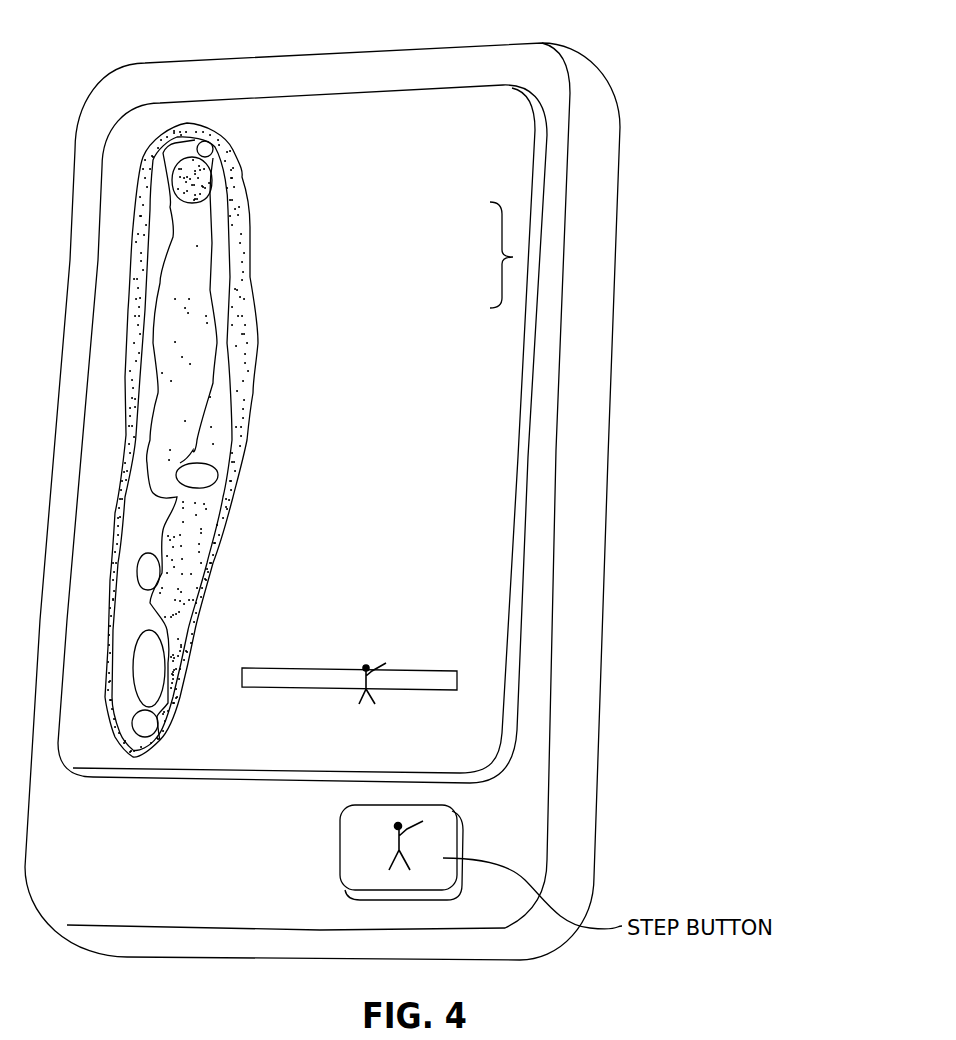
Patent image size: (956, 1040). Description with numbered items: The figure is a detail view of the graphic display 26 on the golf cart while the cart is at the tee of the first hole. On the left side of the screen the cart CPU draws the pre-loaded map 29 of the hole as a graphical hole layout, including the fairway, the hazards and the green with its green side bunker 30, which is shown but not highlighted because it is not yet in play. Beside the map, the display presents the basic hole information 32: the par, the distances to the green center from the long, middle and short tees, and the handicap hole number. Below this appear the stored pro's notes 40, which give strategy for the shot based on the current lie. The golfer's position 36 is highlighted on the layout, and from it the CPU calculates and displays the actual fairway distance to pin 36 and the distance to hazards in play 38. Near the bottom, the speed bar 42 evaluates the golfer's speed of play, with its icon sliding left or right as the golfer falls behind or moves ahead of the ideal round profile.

The graphic display 26 is at (483, 110).
The map 29 is at (190, 111).
The green side bunker 30 is at (212, 148).
The basic hole information 32 is at (513, 257).
The golfer's position / distance to pin 36 is at (477, 572).
The distance to hazards in play 38 is at (485, 610).
The pro's notes 40 is at (498, 397).
The speed bar 42 is at (462, 677).